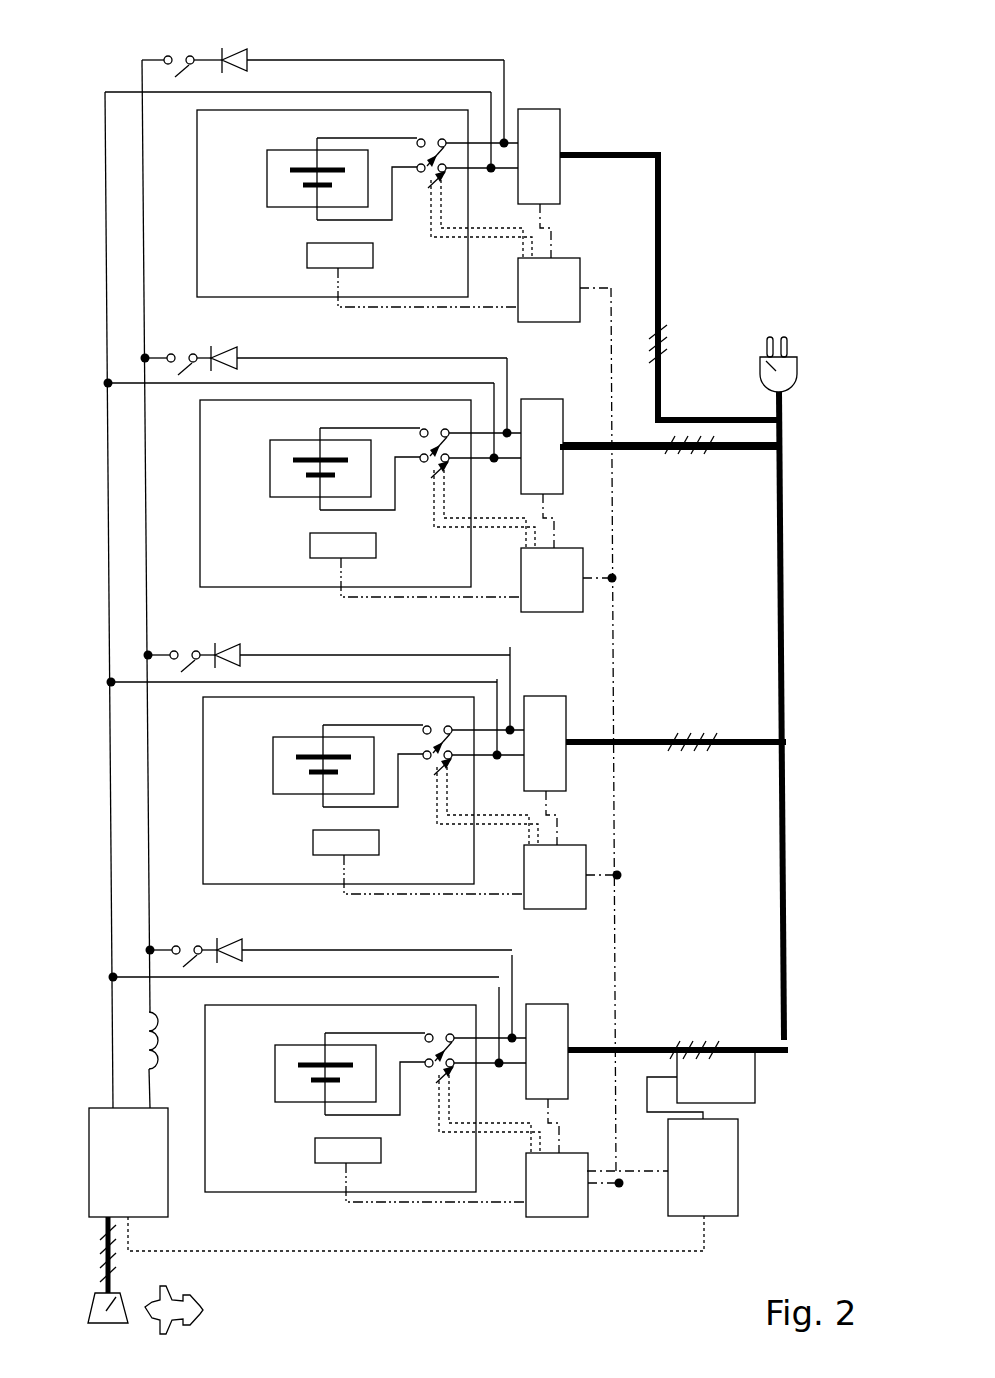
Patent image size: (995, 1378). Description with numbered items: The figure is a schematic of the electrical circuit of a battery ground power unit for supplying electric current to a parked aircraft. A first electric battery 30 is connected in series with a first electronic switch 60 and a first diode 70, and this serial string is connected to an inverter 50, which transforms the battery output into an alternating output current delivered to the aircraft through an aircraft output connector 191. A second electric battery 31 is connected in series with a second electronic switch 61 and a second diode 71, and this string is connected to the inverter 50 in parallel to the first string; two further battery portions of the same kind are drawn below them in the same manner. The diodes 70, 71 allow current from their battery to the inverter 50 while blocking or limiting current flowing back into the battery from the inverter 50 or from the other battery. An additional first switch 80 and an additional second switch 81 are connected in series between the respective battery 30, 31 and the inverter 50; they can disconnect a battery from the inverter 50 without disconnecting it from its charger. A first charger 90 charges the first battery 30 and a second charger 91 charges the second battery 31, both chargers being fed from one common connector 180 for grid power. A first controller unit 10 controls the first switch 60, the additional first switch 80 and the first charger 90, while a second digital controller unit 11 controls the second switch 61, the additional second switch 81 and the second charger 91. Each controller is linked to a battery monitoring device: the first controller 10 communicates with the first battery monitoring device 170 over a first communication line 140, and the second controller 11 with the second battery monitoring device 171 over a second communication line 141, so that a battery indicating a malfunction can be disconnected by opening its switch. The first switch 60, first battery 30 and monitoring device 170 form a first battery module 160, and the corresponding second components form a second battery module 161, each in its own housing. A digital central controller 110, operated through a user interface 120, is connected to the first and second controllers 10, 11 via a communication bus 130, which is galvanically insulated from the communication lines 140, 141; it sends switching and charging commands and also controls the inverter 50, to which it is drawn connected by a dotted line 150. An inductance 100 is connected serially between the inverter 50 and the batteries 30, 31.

The first controller unit 10 is at (518, 315).
The second digital controller unit 11 is at (506, 591).
The first electric battery 30 is at (267, 168).
The second electric battery 31 is at (294, 475).
The inverter 50 is at (89, 1130).
The first electronic switch 60 is at (416, 192).
The second electronic switch 61 is at (467, 495).
The first diode 70 is at (250, 54).
The second diode 71 is at (242, 352).
The additional first switch 80 is at (186, 58).
The additional second switch 81 is at (189, 356).
The first charger 90 is at (540, 108).
The second charger 91 is at (563, 424).
The inductance 100 is at (160, 1050).
The digital central controller 110 is at (738, 1182).
The user interface 120 is at (755, 1082).
The communication bus 130 is at (614, 937).
The first communication line 140 is at (400, 308).
The second communication line 141 is at (431, 596).
The control line 150 is at (560, 1255).
The first battery module 160 is at (197, 200).
The second battery module 161 is at (314, 493).
The first battery monitoring device 170 is at (307, 255).
The second battery monitoring device 171 is at (301, 545).
The common connector 180 is at (760, 360).
The aircraft output connector 191 is at (150, 1299).